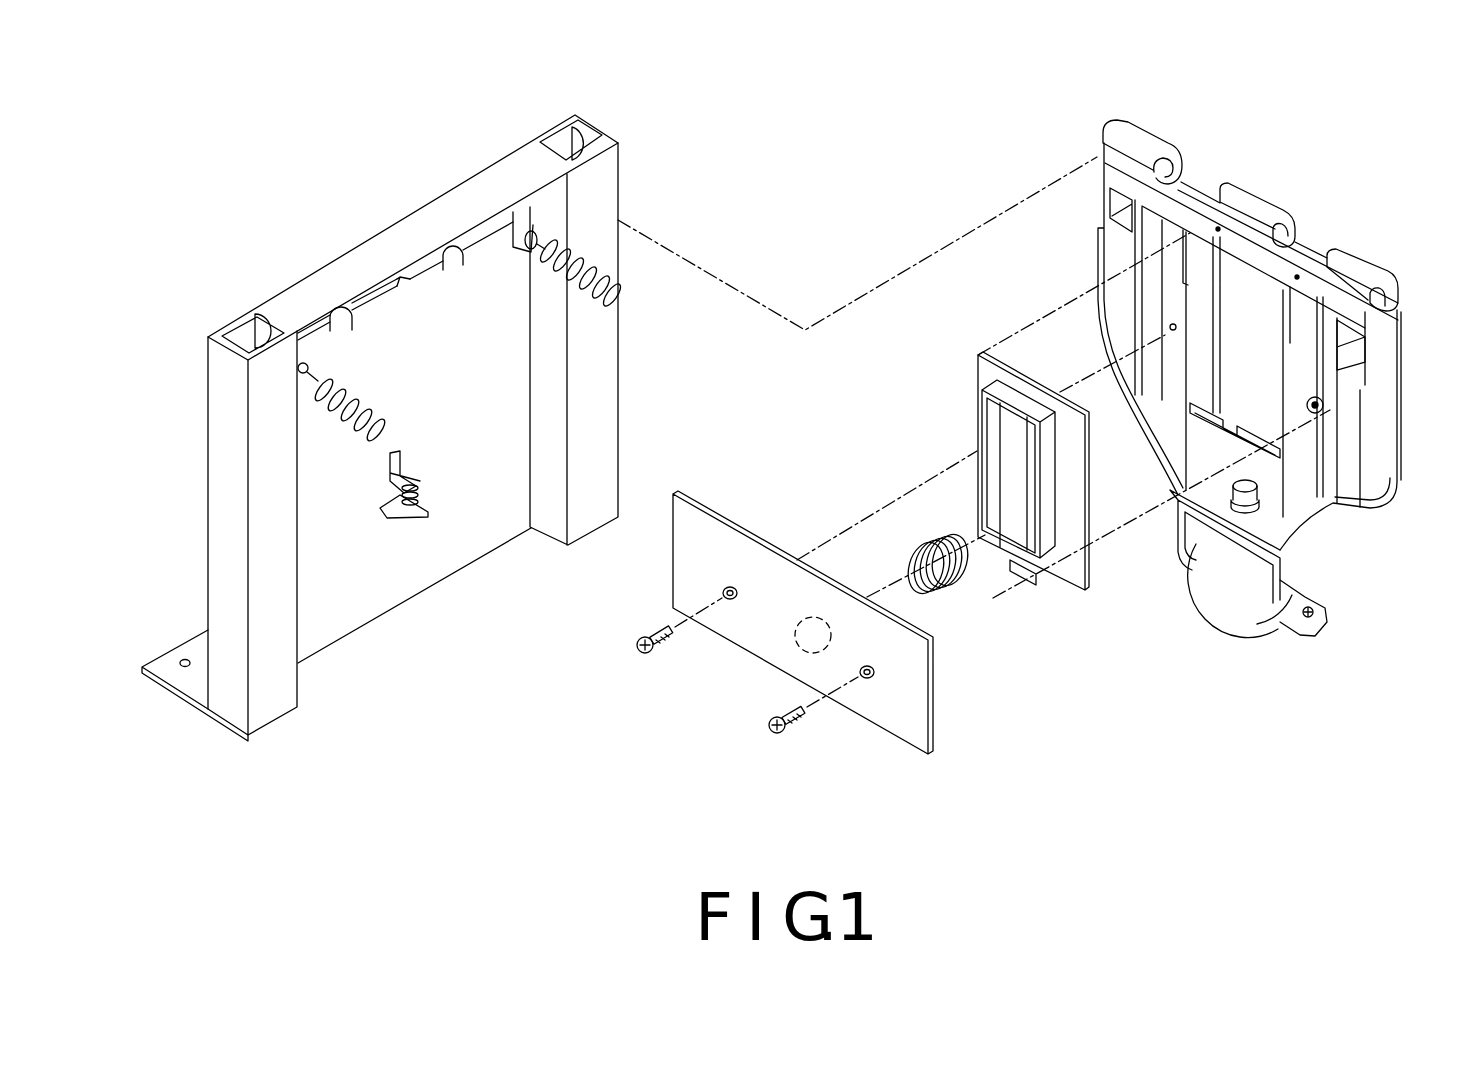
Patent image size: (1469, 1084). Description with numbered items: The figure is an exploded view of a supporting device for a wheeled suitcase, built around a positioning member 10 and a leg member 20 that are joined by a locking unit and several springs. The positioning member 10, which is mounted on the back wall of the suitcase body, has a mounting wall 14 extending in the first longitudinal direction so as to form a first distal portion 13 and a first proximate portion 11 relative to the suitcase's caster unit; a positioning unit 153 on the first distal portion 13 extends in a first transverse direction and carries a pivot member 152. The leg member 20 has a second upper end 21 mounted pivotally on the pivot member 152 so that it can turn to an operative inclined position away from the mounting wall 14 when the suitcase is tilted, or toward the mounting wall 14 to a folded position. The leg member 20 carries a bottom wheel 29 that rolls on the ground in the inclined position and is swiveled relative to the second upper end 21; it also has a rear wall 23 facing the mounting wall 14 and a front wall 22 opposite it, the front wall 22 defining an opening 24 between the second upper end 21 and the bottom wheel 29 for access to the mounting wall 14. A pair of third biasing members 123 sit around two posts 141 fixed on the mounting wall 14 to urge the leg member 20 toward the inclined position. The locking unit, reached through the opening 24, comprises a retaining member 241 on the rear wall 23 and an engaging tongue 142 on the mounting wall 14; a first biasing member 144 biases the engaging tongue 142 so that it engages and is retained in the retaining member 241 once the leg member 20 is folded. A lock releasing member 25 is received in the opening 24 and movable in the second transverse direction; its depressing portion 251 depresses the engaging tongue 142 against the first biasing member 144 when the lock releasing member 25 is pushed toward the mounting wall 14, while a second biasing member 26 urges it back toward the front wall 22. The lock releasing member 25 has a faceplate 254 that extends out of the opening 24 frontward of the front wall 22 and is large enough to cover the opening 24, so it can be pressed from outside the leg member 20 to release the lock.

The positioning member 10 is at (617, 432).
The first proximate portion 11 is at (185, 680).
The first distal portion 13 is at (525, 155).
The mounting wall 14 is at (468, 345).
The leg member 20 is at (1398, 425).
The second upper end 21 is at (1143, 143).
The front wall 22 is at (1400, 316).
The rear wall 23 is at (1347, 467).
The opening 24 is at (1247, 333).
The lock releasing member 25 is at (1090, 573).
The second biasing member 26 is at (920, 548).
The bottom wheel 29 is at (1243, 620).
The third biasing members 123 is at (594, 254).
The posts 141 is at (512, 240).
The engaging tongue 142 is at (408, 472).
The first biasing member 144 is at (422, 490).
The pivot member 152 is at (367, 313).
The positioning unit 153 is at (487, 265).
The retaining member 241 is at (1227, 438).
The depressing portion 251 is at (1017, 560).
The faceplate 254 is at (983, 370).